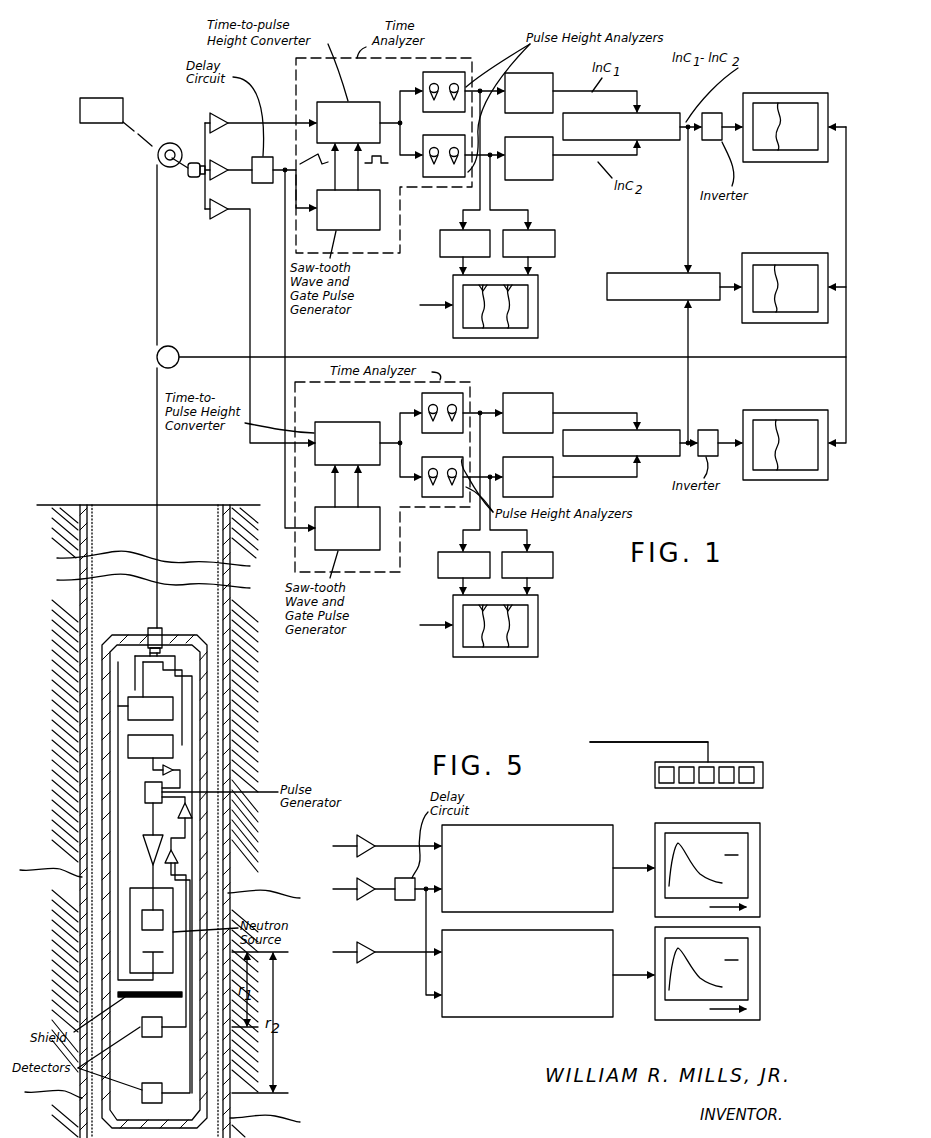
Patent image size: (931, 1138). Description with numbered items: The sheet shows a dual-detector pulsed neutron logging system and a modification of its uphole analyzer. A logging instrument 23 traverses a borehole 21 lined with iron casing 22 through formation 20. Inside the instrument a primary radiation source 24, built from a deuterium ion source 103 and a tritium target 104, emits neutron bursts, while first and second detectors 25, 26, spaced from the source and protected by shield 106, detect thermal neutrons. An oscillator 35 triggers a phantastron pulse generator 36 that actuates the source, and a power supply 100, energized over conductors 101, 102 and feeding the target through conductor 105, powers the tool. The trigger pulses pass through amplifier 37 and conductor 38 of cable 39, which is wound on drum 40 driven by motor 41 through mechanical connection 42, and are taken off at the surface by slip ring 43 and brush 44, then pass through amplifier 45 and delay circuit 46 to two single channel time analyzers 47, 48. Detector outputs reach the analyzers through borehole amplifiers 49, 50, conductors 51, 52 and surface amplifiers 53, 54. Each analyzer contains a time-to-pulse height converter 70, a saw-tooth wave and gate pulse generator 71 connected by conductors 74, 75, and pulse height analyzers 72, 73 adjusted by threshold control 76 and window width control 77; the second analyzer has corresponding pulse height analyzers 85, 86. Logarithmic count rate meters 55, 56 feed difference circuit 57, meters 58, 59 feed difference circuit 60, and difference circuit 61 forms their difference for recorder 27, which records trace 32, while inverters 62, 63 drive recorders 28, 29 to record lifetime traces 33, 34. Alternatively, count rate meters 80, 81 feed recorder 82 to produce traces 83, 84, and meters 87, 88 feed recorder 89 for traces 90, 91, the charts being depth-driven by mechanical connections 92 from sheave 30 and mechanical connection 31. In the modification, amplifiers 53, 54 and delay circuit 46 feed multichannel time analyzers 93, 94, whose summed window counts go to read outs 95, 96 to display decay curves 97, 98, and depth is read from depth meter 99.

In FIG. 1, the formation 20 is at (320, 1027).
In FIG. 1, the borehole 21 is at (133, 513).
In FIG. 1, the iron casing 22 is at (228, 510).
In FIG. 1, the logging instrument 23 is at (176, 636).
In FIG. 1, the primary radiation source 24 is at (130, 944).
In FIG. 1, the first detector 25 is at (142, 1030).
In FIG. 1, the second detector 26 is at (154, 1083).
In FIG. 1, the recorder 27 is at (788, 253).
In FIG. 1, the recorder 28 is at (785, 93).
In FIG. 1, the recorder 29 is at (789, 410).
In FIG. 1, the sheave 30 is at (172, 346).
In FIG. 1, the mechanical connection 31 is at (312, 356).
In FIG. 5, the mechanical connection 31 is at (646, 742).
In FIG. 1, the trace 32 is at (779, 300).
In FIG. 1, the trace 33 is at (781, 140).
In FIG. 1, the trace 34 is at (780, 460).
In FIG. 1, the oscillator 35 is at (128, 748).
In FIG. 1, the phantastron pulse generator 36 is at (145, 792).
In FIG. 1, the amplifier 37 is at (176, 771).
In FIG. 1, the conductor 38 is at (182, 718).
In FIG. 1, the cable 39 is at (156, 432).
In FIG. 1, the drum 40 is at (172, 143).
In FIG. 1, the motor 41 is at (103, 97).
In FIG. 1, the mechanical connection 42 is at (138, 135).
In FIG. 1, the slip ring 43 is at (165, 158).
In FIG. 1, the brush 44 is at (176, 170).
In FIG. 1, the amplifier 45 is at (226, 162).
In FIG. 5, the amplifier 45 is at (371, 897).
In FIG. 1, the delay circuit 46 is at (262, 185).
In FIG. 5, the delay circuit 46 is at (405, 877).
In FIG. 1, the single channel time analyzer 47 is at (294, 82).
In FIG. 1, the single channel time analyzer 48 is at (470, 396).
In FIG. 1, the borehole amplifier 49 is at (180, 858).
In FIG. 1, the borehole amplifier 50 is at (192, 810).
In FIG. 1, the conductor 51 is at (180, 840).
In FIG. 1, the conductor 52 is at (190, 784).
In FIG. 1, the surface amplifier 53 is at (226, 116).
In FIG. 5, the surface amplifier 53 is at (369, 838).
In FIG. 1, the surface amplifier 54 is at (218, 216).
In FIG. 5, the surface amplifier 54 is at (371, 960).
In FIG. 1, the logarithmic count rate meter 55 is at (533, 73).
In FIG. 1, the logarithmic count rate meter 56 is at (554, 175).
In FIG. 1, the difference circuit 57 is at (650, 142).
In FIG. 1, the logarithmic count rate meter 58 is at (553, 395).
In FIG. 1, the logarithmic count rate meter 59 is at (554, 493).
In FIG. 1, the difference circuit 60 is at (672, 430).
In FIG. 1, the difference circuit 61 is at (666, 272).
In FIG. 1, the inverter 62 is at (708, 142).
In FIG. 1, the inverter 63 is at (708, 430).
In FIG. 1, the time-to-pulse height converter 70 is at (349, 101).
In FIG. 1, the saw-tooth wave and gate pulse generator 71 is at (337, 231).
In FIG. 1, the single channel pulse height analyzer 72 is at (422, 80).
In FIG. 1, the single channel pulse height analyzer 73 is at (437, 136).
In FIG. 1, the conductor 74 is at (332, 165).
In FIG. 1, the conductor 75 is at (362, 178).
In FIG. 1, the threshold control 76 is at (435, 84).
In FIG. 1, the window width control 77 is at (457, 87).
In FIG. 1, the count rate meter 80 is at (455, 229).
In FIG. 1, the count rate meter 81 is at (555, 243).
In FIG. 1, the recorder 82 is at (540, 286).
In FIG. 1, the trace 83 is at (480, 315).
In FIG. 1, the trace 84 is at (508, 312).
In FIG. 1, the single channel pulse height analyzer 85 is at (421, 406).
In FIG. 1, the single channel pulse height analyzer 86 is at (421, 486).
In FIG. 1, the count rate meter 87 is at (452, 551).
In FIG. 1, the count rate meter 88 is at (543, 551).
In FIG. 1, the recorder 89 is at (503, 658).
In FIG. 1, the trace 90 is at (476, 632).
In FIG. 1, the trace 91 is at (480, 642).
In FIG. 1, the mechanical connection 92 is at (440, 303).
In FIG. 5, the multichannel time analyzer 93 is at (534, 824).
In FIG. 5, the multichannel time analyzer 94 is at (440, 1009).
In FIG. 5, the read out 95 is at (756, 824).
In FIG. 5, the read out 96 is at (762, 975).
In FIG. 5, the decay curve 97 is at (695, 868).
In FIG. 5, the decay curve 98 is at (695, 973).
In FIG. 5, the depth meter 99 is at (735, 762).
In FIG. 1, the power supply 100 is at (128, 706).
In FIG. 1, the conductor 101 is at (135, 686).
In FIG. 1, the conductor 102 is at (140, 668).
In FIG. 1, the ion source 103 is at (142, 920).
In FIG. 1, the target 104 is at (143, 955).
In FIG. 1, the conductor 105 is at (118, 825).
In FIG. 1, the shield 106 is at (118, 994).